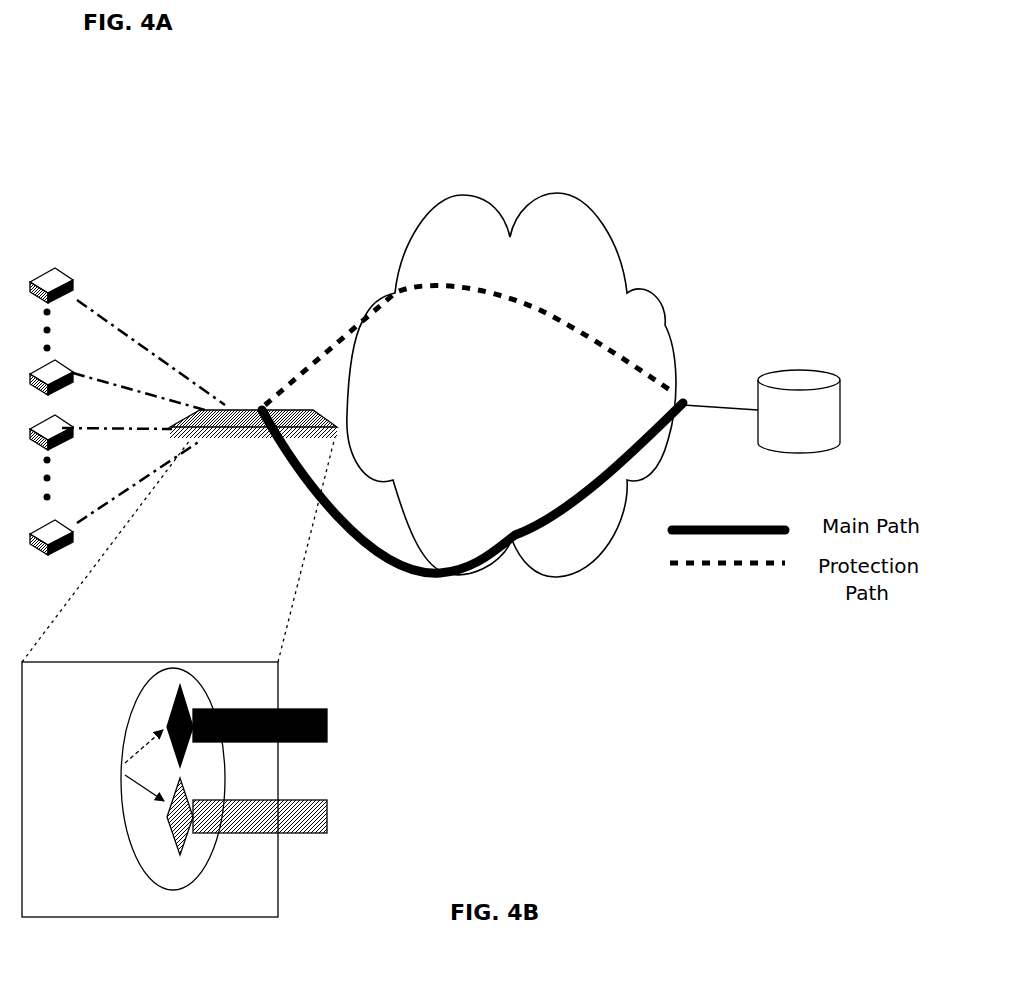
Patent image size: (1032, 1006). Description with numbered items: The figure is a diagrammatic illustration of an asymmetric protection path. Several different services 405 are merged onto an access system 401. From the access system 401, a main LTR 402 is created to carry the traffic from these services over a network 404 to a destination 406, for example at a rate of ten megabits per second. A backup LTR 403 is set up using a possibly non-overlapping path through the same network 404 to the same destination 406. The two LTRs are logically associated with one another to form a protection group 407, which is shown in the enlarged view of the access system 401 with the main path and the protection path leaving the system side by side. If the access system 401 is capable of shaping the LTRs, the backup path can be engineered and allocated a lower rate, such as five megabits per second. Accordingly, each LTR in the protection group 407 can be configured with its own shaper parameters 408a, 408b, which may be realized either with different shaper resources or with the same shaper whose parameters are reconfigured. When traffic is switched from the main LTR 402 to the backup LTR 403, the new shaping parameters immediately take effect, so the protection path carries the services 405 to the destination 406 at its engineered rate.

In FIG. 4A, the access system 401 is at (247, 407).
In FIG. 4B, the access system 401 is at (175, 662).
In FIG. 4A, the main LTR 402 is at (405, 578).
In FIG. 4B, the main LTR 402 is at (298, 835).
In FIG. 4A, the backup LTR 403 is at (350, 335).
In FIG. 4B, the backup LTR 403 is at (327, 708).
In FIG. 4A, the network 404 is at (667, 317).
In FIG. 4A, the services 405 is at (152, 470).
In FIG. 4A, the destination 406 is at (798, 378).
In FIG. 4B, the protection group 407 is at (175, 890).
In FIG. 4B, the shaper parameters 408a is at (180, 857).
In FIG. 4B, the shaper parameters 408b is at (180, 767).